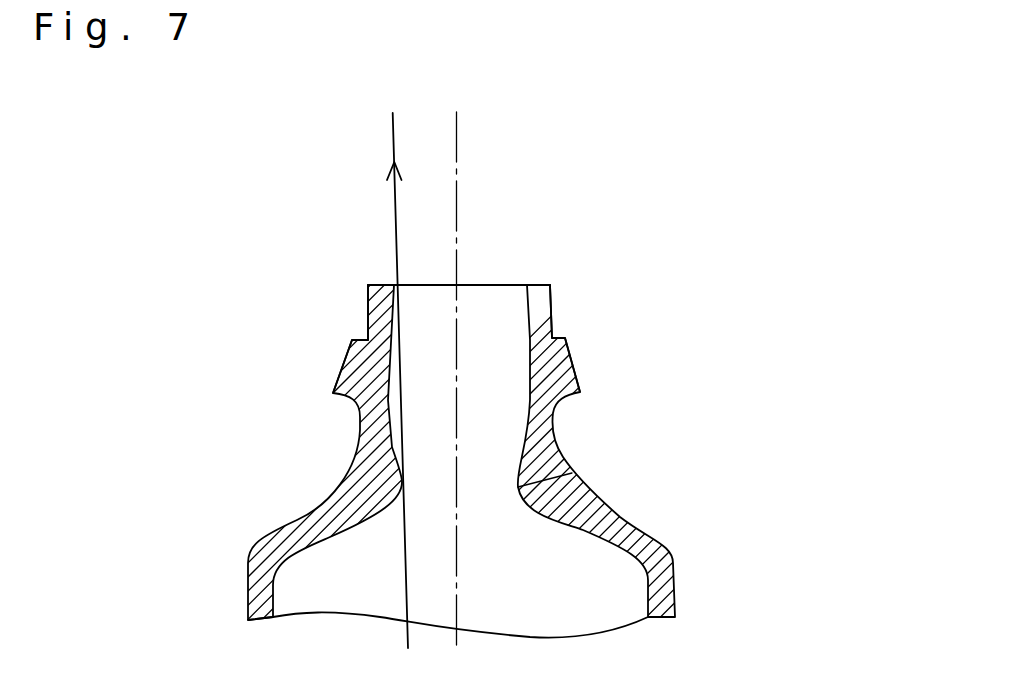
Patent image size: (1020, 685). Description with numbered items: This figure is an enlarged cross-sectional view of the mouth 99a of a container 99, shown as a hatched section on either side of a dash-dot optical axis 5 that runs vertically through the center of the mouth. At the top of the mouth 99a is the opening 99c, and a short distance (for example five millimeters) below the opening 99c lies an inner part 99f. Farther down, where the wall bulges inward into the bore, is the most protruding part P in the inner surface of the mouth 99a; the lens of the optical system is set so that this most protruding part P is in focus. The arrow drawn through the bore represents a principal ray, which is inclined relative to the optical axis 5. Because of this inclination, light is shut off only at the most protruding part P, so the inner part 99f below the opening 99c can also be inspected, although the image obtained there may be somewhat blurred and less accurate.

The optical axis 5 is at (457, 160).
The container 99 is at (685, 583).
The opening 99c is at (493, 285).
The inner part 99f is at (552, 300).
The mouth 99a is at (572, 354).
The most protruding part P is at (572, 473).